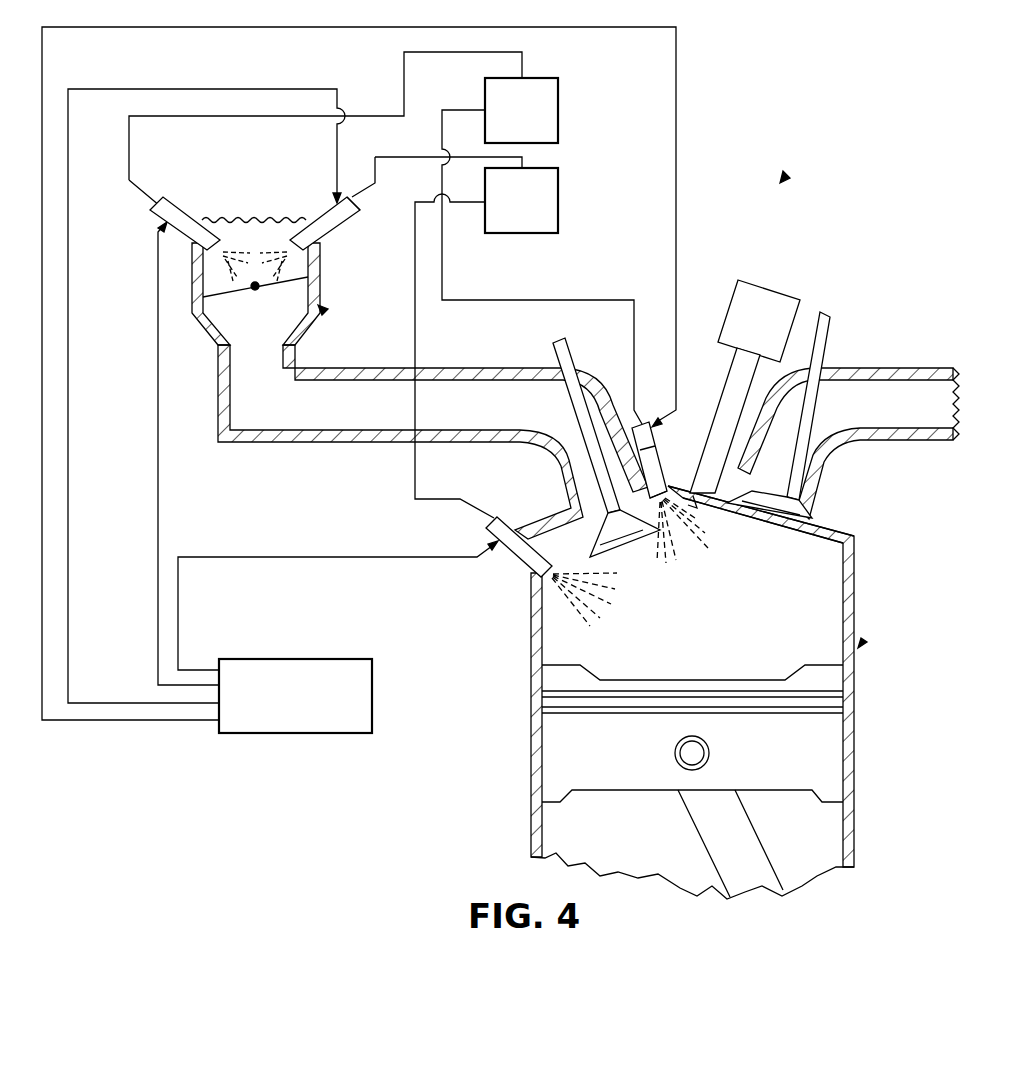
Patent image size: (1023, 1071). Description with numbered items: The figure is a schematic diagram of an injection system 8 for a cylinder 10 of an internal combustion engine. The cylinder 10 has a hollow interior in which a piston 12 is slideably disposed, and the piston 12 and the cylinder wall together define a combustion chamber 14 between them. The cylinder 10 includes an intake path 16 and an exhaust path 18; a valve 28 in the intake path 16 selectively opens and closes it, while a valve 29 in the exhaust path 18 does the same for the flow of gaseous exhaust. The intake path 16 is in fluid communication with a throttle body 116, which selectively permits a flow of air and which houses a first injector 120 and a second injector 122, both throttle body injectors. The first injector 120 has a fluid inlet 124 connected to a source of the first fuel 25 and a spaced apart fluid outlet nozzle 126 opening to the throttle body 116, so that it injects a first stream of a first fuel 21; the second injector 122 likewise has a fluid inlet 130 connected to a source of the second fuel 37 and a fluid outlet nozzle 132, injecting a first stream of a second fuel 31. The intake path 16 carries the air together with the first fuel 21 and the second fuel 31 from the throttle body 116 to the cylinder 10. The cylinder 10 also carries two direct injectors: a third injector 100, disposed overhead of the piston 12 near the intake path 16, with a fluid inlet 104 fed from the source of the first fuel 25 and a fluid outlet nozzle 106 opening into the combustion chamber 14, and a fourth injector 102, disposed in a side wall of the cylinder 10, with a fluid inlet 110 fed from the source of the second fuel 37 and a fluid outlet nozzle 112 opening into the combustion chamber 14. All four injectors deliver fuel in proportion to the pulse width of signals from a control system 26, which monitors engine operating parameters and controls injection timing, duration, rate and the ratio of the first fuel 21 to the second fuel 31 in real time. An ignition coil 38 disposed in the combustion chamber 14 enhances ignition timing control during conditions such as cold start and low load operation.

The injection system 8 is at (785, 177).
The cylinder 10 is at (862, 644).
The piston 12 is at (822, 752).
The combustion chamber 14 is at (714, 651).
The intake path 16 is at (352, 421).
The exhaust path 18 is at (915, 420).
The first fuel 21 is at (227, 274).
The source of the first fuel 25 is at (548, 90).
The control system 26 is at (362, 700).
The valve 28 is at (642, 533).
The valve 29 is at (769, 518).
The second fuel 31 is at (292, 274).
The source of the second fuel 37 is at (548, 183).
The ignition coil 38 is at (762, 300).
The third injector 100 is at (650, 450).
The fourth injector 102 is at (510, 537).
The fluid inlet 104 is at (642, 423).
The fluid outlet nozzle 106 is at (684, 519).
The fluid inlet 110 is at (487, 528).
The fluid outlet nozzle 112 is at (566, 566).
The throttle body 116 is at (324, 311).
The first injector 120 is at (193, 210).
The second injector 122 is at (322, 215).
The fluid inlet 124 is at (164, 197).
The fluid outlet nozzle 126 is at (227, 258).
The fluid inlet 130 is at (355, 201).
The fluid outlet nozzle 132 is at (290, 270).